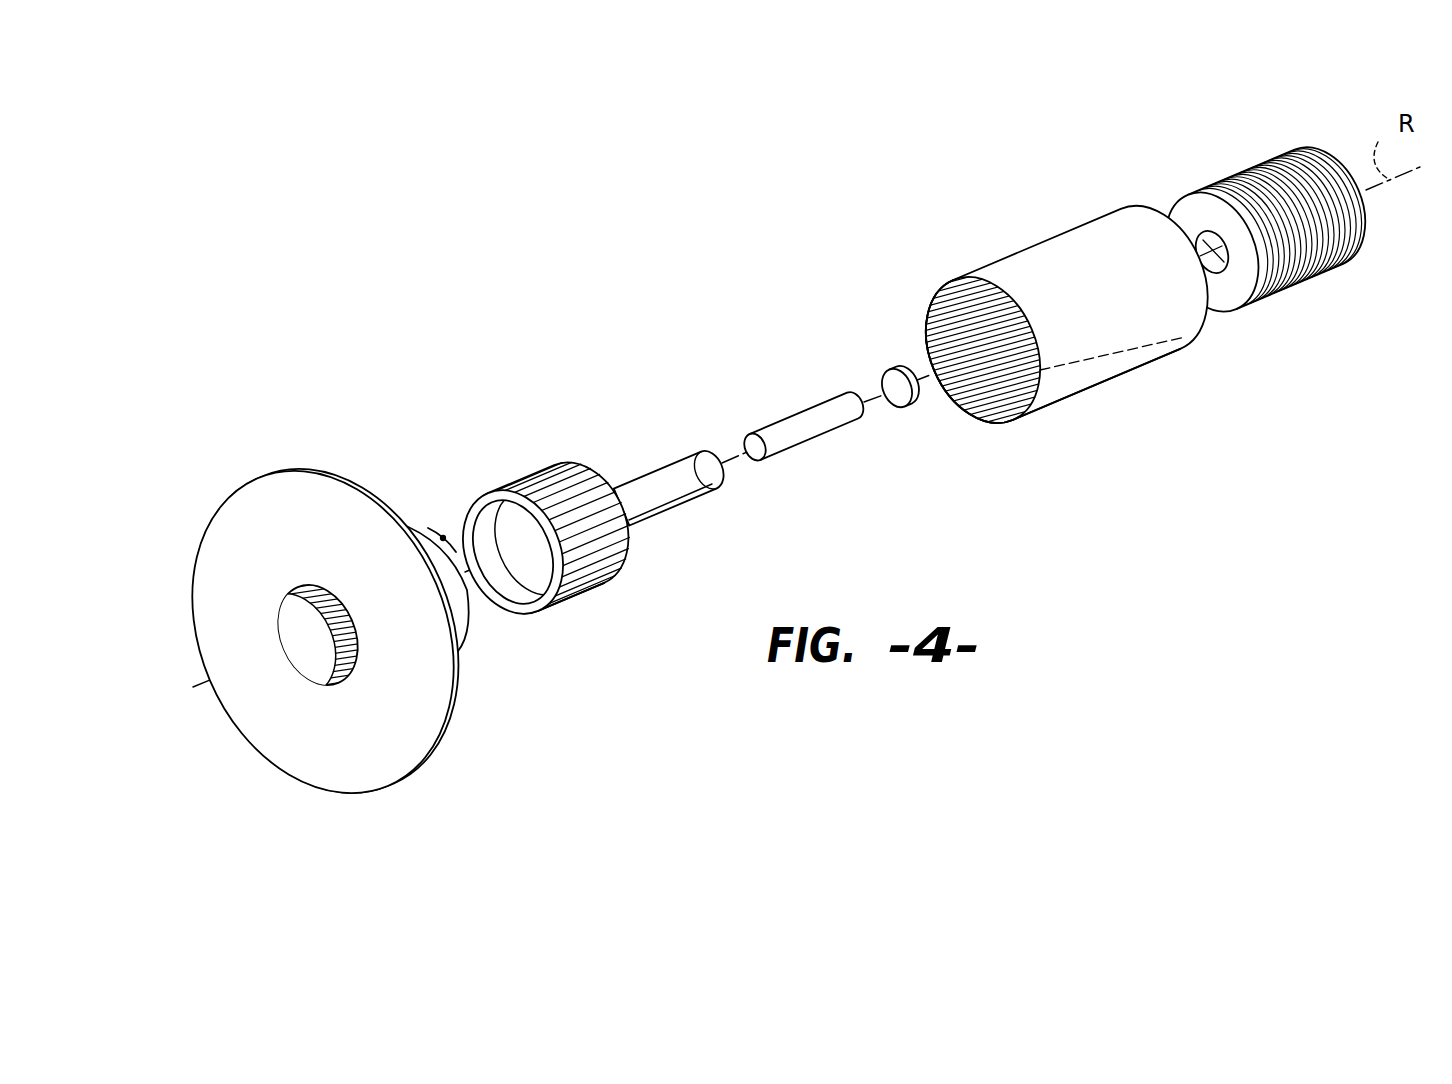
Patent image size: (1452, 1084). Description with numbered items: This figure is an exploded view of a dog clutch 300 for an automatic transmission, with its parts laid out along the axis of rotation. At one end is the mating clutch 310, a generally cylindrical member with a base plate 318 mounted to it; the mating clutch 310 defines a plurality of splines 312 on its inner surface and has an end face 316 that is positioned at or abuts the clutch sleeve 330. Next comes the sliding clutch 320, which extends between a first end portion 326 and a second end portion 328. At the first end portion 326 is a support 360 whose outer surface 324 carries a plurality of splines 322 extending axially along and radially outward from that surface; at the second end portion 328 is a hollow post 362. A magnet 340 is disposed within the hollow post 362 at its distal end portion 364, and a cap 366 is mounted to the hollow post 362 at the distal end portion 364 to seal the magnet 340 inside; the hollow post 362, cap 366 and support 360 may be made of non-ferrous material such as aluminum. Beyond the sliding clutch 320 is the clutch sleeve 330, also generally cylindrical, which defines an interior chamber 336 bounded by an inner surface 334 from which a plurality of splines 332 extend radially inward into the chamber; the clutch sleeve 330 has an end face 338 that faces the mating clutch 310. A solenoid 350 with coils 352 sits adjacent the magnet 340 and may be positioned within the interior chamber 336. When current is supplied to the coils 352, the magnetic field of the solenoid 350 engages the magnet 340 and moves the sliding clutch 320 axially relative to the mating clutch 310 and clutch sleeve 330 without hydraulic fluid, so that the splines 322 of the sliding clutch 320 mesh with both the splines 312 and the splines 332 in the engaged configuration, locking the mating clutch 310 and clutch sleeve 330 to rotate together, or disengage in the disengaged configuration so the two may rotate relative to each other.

The dog clutch 300 is at (323, 340).
The mating clutch 310 is at (422, 523).
The splines 312 is at (332, 603).
The end face 316 is at (443, 538).
The base plate 318 is at (257, 512).
The sliding clutch 320 is at (521, 614).
The splines 322 is at (601, 480).
The outer surface 324 is at (505, 488).
The first end portion 326 is at (552, 610).
The second end portion 328 is at (721, 481).
The clutch sleeve 330 is at (1135, 347).
The splines 332 is at (967, 423).
The inner surface 334 is at (925, 333).
The interior chamber 336 is at (940, 335).
The end face 338 is at (1010, 427).
The magnet 340 is at (790, 446).
The solenoid 350 is at (1192, 205).
The coils 352 is at (1260, 160).
The support 360 is at (514, 578).
The hollow post 362 is at (650, 498).
The distal end portion 364 is at (705, 450).
The cap 366 is at (897, 404).